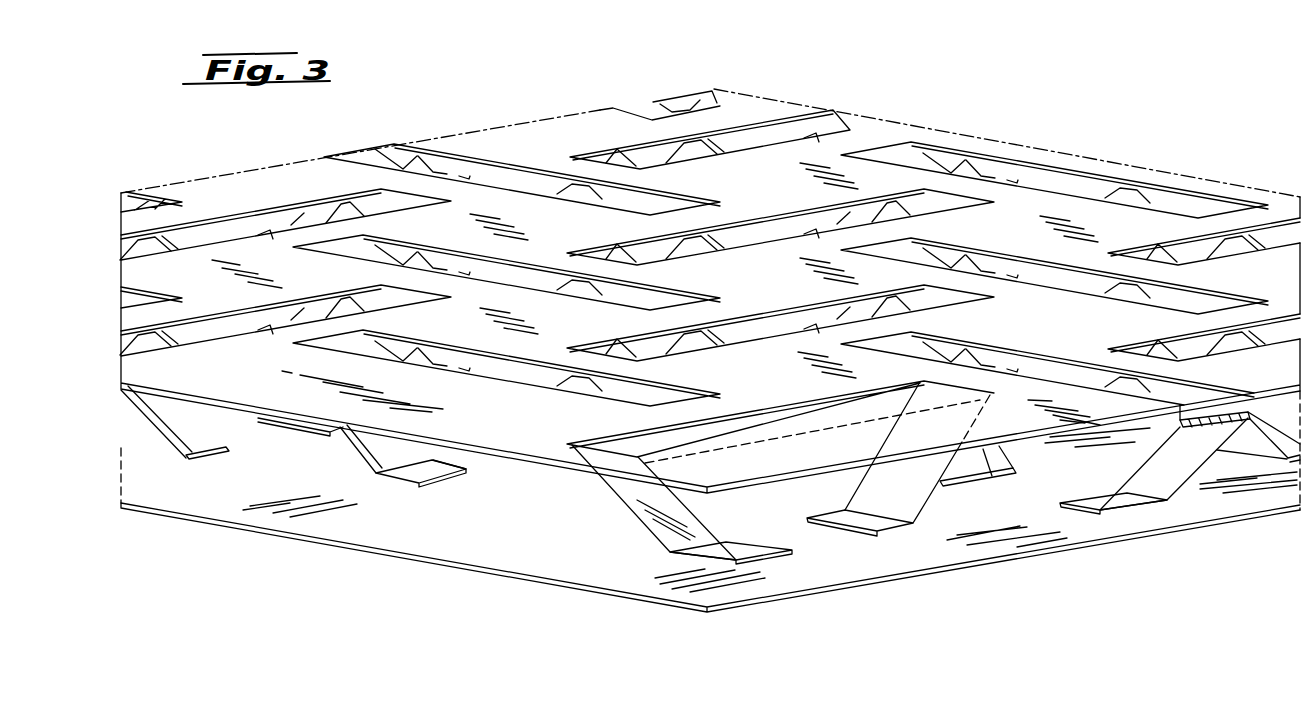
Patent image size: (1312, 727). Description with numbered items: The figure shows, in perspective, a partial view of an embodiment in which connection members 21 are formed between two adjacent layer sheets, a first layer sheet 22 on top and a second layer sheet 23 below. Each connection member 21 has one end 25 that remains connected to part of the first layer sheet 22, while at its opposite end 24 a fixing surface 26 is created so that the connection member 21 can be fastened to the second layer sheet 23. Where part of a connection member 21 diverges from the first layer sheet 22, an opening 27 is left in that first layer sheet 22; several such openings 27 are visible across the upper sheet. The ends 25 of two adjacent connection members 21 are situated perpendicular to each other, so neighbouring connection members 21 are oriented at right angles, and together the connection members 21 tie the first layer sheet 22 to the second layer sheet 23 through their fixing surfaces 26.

The connection member 21 is at (375, 198).
The first layer sheet 22 is at (244, 410).
The second layer sheet 23 is at (196, 521).
The end of the connection member 24 is at (445, 478).
The end of the connection member 25 is at (603, 452).
The fixing surface 26 is at (405, 473).
The opening 27 is at (760, 135).